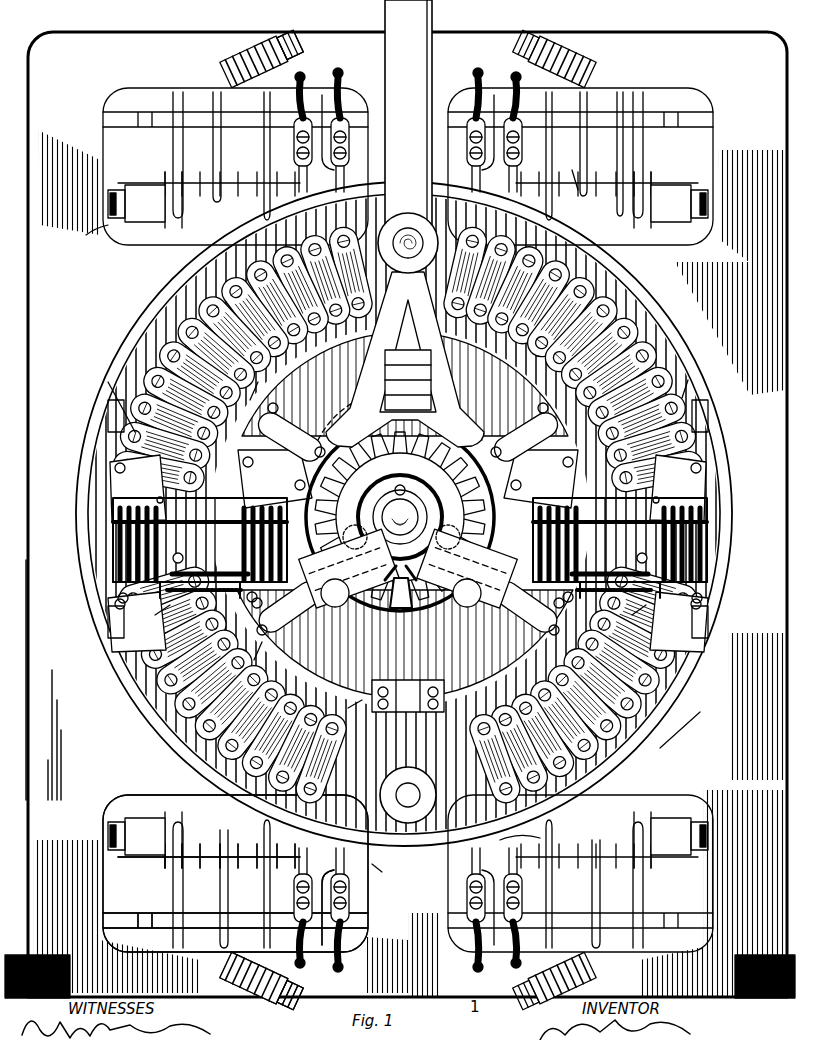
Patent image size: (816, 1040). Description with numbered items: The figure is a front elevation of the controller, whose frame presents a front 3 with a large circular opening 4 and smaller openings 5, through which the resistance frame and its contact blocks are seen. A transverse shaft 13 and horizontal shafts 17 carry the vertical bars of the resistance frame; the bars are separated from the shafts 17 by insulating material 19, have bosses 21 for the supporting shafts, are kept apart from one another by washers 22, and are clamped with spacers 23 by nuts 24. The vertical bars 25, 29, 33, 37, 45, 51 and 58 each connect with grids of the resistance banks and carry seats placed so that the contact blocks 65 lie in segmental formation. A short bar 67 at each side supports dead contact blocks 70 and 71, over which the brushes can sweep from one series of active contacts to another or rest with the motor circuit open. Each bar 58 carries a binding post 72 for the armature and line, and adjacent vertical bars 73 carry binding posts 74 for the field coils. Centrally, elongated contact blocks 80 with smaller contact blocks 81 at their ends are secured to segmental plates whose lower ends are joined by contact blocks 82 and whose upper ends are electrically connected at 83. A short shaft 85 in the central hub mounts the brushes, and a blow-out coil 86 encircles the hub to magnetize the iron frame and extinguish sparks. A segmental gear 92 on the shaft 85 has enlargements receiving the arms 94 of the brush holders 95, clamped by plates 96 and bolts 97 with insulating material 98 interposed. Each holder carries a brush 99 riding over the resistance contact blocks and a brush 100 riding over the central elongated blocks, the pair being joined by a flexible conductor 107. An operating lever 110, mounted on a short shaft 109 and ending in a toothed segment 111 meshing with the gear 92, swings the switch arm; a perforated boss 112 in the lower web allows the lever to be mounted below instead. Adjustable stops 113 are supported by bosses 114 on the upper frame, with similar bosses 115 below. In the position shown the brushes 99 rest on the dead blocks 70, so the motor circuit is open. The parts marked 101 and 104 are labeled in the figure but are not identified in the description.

The front 3 is at (400, 515).
The large circular opening 4 is at (720, 672).
The smaller openings 5 is at (403, 859).
The transverse shaft 13 is at (400, 499).
The horizontal shaft 17 is at (708, 620).
The insulating material 19 is at (476, 512).
The bosses 21 is at (408, 492).
The washers 22 is at (632, 154).
The spacers 23 is at (402, 514).
The nuts 24 is at (118, 190).
The first bar 25 is at (183, 152).
The vertical bar 29 is at (640, 424).
The vertical bar 33 is at (221, 135).
The vertical bar 37 is at (432, 397).
The vertical bar 45 is at (394, 520).
The vertical bar 51 is at (520, 840).
The bar 58 is at (354, 72).
The contact blocks 65 is at (408, 516).
The short bar 67 is at (110, 399).
The dead contact blocks 70 is at (130, 485).
The dead contact blocks 71 is at (413, 539).
The binding post 72 is at (404, 507).
The vertical bars 73 is at (361, 784).
The binding posts 74 is at (398, 507).
The elongated contact blocks 80 is at (405, 514).
The smaller contact blocks 81 is at (410, 517).
The contact blocks 82 is at (408, 479).
The electrical connection 83 is at (405, 497).
The short shaft 85 is at (400, 514).
The blow-out coil 86 is at (400, 514).
The segmental gear 92 is at (453, 508).
The arms 94 is at (400, 598).
The brush holders 95 is at (443, 531).
The plates 96 is at (401, 577).
The bolts 97 is at (408, 568).
The insulating material 98 is at (407, 569).
The brush 99 is at (707, 540).
The brush 100 is at (408, 609).
The screw 101 is at (421, 492).
The bar 104 is at (707, 590).
The flexible conductor 107 is at (398, 613).
The short shaft 109 is at (380, 212).
The operating lever 110 is at (432, 45).
The toothed segment 111 is at (390, 389).
The perforated boss 112 is at (408, 779).
The adjustable stops 113 is at (302, 52).
The bosses 114 is at (232, 52).
The bosses 115 is at (408, 981).